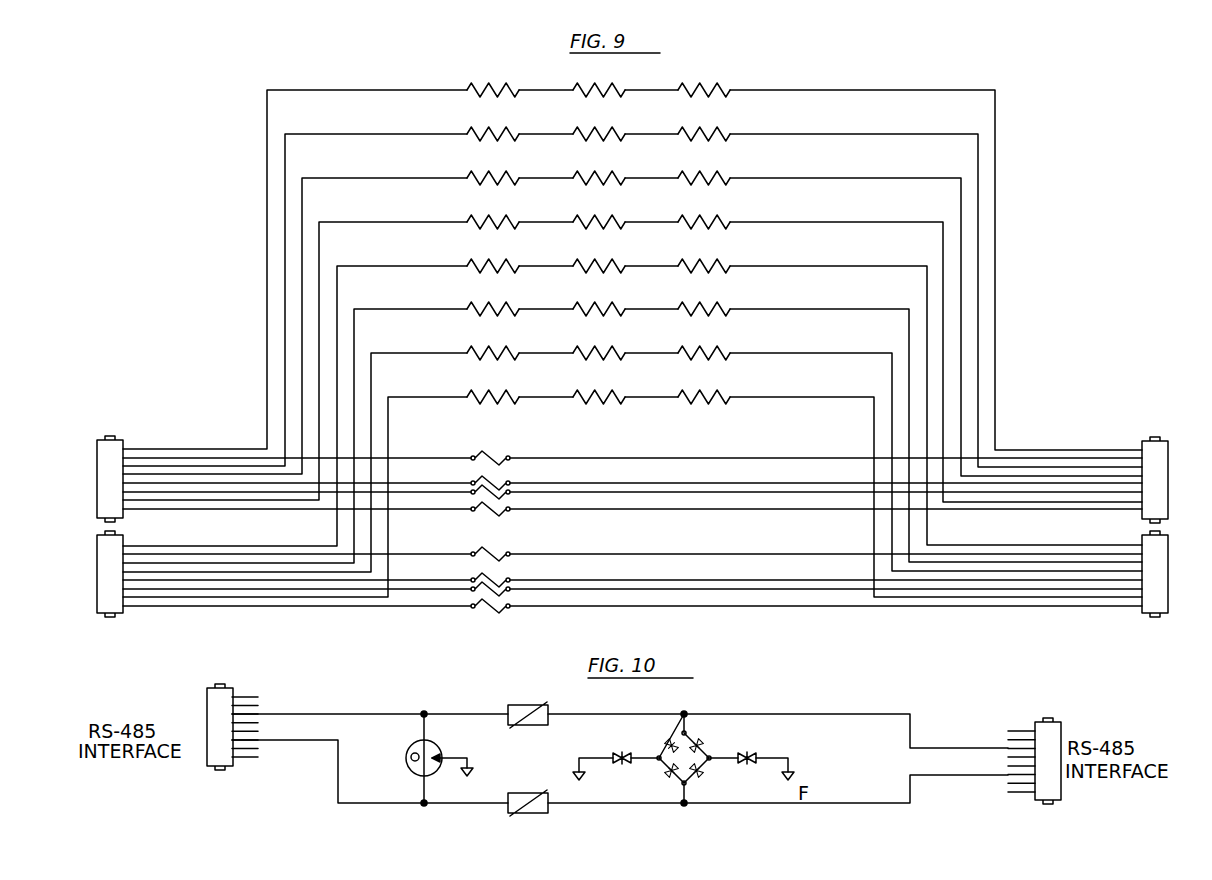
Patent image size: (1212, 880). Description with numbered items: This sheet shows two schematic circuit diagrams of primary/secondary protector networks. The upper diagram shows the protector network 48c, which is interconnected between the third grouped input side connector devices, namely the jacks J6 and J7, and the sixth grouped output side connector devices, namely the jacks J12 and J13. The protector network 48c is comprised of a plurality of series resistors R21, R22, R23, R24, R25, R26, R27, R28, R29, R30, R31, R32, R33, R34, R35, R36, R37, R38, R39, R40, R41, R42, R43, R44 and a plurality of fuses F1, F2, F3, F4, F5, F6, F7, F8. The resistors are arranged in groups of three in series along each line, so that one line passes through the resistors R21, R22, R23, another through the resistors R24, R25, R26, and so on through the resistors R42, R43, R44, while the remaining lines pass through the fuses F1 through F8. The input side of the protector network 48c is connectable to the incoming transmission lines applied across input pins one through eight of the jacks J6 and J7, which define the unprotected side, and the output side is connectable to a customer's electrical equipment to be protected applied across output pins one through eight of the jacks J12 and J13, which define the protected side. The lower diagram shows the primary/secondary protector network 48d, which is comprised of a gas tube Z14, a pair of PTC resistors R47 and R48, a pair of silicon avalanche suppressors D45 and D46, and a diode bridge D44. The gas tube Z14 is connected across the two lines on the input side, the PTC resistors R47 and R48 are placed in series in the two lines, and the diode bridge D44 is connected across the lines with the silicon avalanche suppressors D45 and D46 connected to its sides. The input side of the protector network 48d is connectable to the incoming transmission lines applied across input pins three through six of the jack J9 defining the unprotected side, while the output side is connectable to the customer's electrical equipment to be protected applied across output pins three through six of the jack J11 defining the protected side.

In FIG. 9, the protector network 48c is at (200, 340).
In FIG. 10, the primary/secondary protector network 48d is at (301, 685).
In FIG. 9, the series resistor R21 is at (493, 80).
In FIG. 9, the series resistor R22 is at (599, 80).
In FIG. 9, the series resistor R23 is at (704, 80).
In FIG. 9, the series resistor R24 is at (493, 124).
In FIG. 9, the series resistor R25 is at (599, 124).
In FIG. 9, the series resistor R26 is at (704, 124).
In FIG. 9, the series resistor R27 is at (493, 168).
In FIG. 9, the series resistor R28 is at (599, 168).
In FIG. 9, the series resistor R29 is at (704, 168).
In FIG. 9, the series resistor R30 is at (493, 212).
In FIG. 9, the series resistor R31 is at (599, 212).
In FIG. 9, the series resistor R32 is at (704, 212).
In FIG. 9, the series resistor R33 is at (493, 256).
In FIG. 9, the series resistor R34 is at (599, 256).
In FIG. 9, the series resistor R35 is at (704, 256).
In FIG. 9, the series resistor R36 is at (493, 299).
In FIG. 9, the series resistor R37 is at (599, 299).
In FIG. 9, the series resistor R38 is at (704, 299).
In FIG. 9, the series resistor R39 is at (493, 343).
In FIG. 9, the series resistor R40 is at (599, 343).
In FIG. 9, the series resistor R41 is at (704, 343).
In FIG. 9, the series resistor R42 is at (493, 387).
In FIG. 9, the series resistor R43 is at (599, 387).
In FIG. 9, the series resistor R44 is at (704, 387).
In FIG. 9, the fuse F1 is at (479, 451).
In FIG. 9, the fuse F2 is at (503, 478).
In FIG. 9, the fuse F3 is at (479, 498).
In FIG. 9, the fuse F4 is at (503, 515).
In FIG. 9, the fuse F5 is at (479, 547).
In FIG. 9, the fuse F6 is at (503, 575).
In FIG. 9, the fuse F7 is at (479, 595).
In FIG. 9, the fuse F8 is at (503, 612).
In FIG. 9, the RJ-45 jack J6 is at (118, 447).
In FIG. 9, the RJ-45 jack J7 is at (118, 604).
In FIG. 9, the RJ-45 jack J12 is at (1138, 450).
In FIG. 9, the RJ-45 jack J13 is at (1138, 605).
In FIG. 10, the RJ-45 jack J9 is at (223, 755).
In FIG. 10, the RJ-45 jack J11 is at (1036, 732).
In FIG. 10, the gas tube Z14 is at (444, 758).
In FIG. 10, the PTC resistor R47 is at (528, 704).
In FIG. 10, the PTC resistor R48 is at (528, 791).
In FIG. 10, the diode bridge D44 is at (668, 758).
In FIG. 10, the silicon avalanche suppressor D45 is at (616, 770).
In FIG. 10, the silicon avalanche suppressor D46 is at (751, 770).